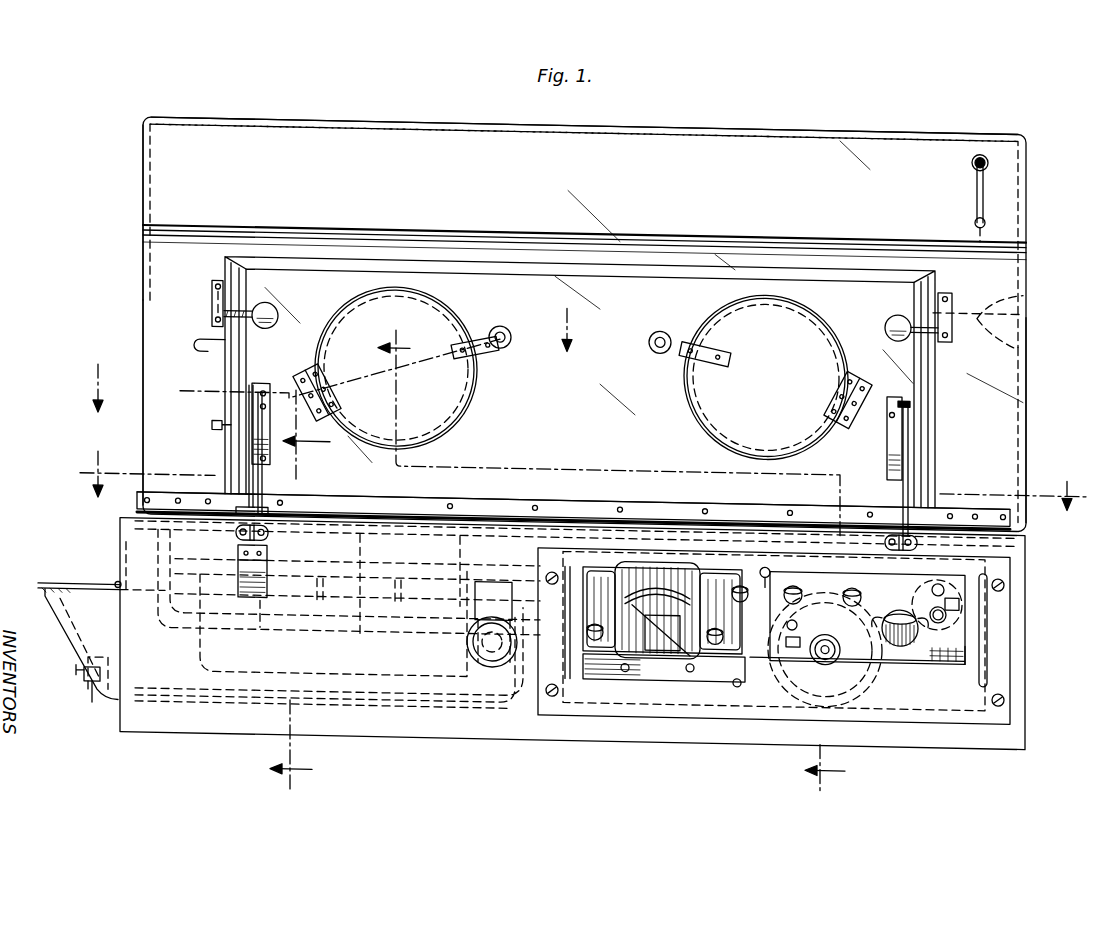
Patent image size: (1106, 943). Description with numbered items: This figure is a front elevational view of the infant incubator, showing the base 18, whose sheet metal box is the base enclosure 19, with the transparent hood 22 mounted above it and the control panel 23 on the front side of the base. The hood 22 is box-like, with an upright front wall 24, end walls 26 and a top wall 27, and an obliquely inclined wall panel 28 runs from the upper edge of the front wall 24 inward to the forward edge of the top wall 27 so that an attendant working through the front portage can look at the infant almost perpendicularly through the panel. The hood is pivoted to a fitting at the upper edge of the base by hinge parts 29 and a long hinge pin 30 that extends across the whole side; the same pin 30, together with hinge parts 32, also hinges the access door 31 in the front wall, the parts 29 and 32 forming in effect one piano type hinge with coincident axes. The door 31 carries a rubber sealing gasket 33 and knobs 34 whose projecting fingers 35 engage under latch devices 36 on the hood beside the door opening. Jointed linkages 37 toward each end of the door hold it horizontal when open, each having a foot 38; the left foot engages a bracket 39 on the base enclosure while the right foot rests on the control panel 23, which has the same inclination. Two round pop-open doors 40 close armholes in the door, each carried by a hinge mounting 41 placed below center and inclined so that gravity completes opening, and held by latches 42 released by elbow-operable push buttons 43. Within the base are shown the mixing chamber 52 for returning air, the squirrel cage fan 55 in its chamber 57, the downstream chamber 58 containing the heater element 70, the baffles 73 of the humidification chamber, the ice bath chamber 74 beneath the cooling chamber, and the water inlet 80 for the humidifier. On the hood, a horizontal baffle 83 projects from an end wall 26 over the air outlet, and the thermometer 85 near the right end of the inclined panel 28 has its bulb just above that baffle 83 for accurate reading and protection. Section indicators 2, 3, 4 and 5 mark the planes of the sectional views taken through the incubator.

The section line 2- 2 is at (585, 471).
The section line 3- 3 is at (522, 559).
The section line 4- 4 is at (332, 349).
The section line 5- 5 is at (300, 590).
The base 18 is at (422, 703).
The base enclosure 19 is at (575, 740).
The hood 22 is at (138, 170).
The control panel 23 is at (960, 612).
The front wall 24 is at (150, 272).
The end walls 26 is at (150, 322).
The top wall 27 is at (775, 117).
The inclined wall panel 28 is at (668, 145).
The hinge parts 29 is at (180, 492).
The hinge pin 30 is at (135, 512).
The access door 31 is at (662, 290).
The hinge parts 32 is at (500, 492).
The sealing gasket 33 is at (224, 365).
The knobs 34 is at (279, 313).
The projecting fingers 35 is at (250, 306).
The latch devices 36 is at (212, 282).
The jointed linkages 37 is at (252, 445).
The foot 38 is at (262, 500).
The bracket 39 is at (268, 560).
The pop-open doors 40 is at (475, 383).
The hinge mounting 41 is at (310, 367).
The latches 42 is at (482, 350).
The push buttons 43 is at (504, 319).
The mixing chamber 52 is at (905, 520).
The squirrel cage fan 55 is at (936, 326).
The fan chamber 57 is at (772, 555).
The heating chamber 58 is at (740, 573).
The heater element 70 is at (640, 690).
The baffles 73 is at (445, 548).
The ice bath chamber 74 is at (210, 700).
The water inlet 80 is at (492, 662).
The horizontal baffle 83 is at (1025, 278).
The thermometer 85 is at (988, 187).